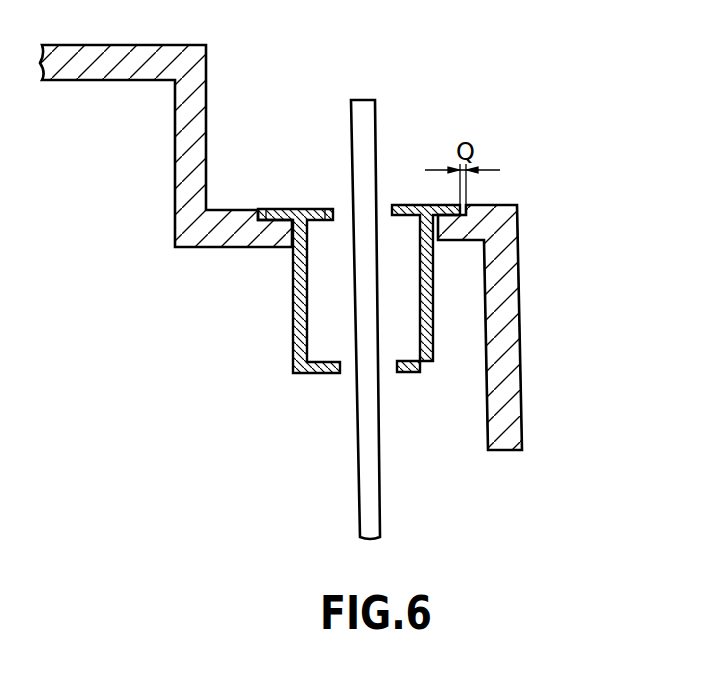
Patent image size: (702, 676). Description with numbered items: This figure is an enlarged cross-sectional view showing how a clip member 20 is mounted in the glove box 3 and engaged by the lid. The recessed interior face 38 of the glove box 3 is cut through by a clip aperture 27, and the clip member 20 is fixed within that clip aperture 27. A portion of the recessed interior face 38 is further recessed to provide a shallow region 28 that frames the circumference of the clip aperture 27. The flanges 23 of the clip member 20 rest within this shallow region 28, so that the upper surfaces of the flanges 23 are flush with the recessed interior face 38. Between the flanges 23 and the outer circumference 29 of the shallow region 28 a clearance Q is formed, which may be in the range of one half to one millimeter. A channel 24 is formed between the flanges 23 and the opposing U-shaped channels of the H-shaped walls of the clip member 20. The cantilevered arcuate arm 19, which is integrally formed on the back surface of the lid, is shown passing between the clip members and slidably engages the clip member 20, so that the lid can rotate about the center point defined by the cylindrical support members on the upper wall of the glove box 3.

The glove box 3 is at (521, 330).
The cantilevered arcuate arm 19 is at (375, 103).
The clip member 20 is at (296, 351).
The flange 23 is at (403, 207).
The channel 24 is at (338, 208).
The clip aperture 27 is at (293, 255).
The shallow region 28 is at (465, 207).
The outer circumference 29 is at (259, 211).
The recessed interior face 38 is at (237, 209).